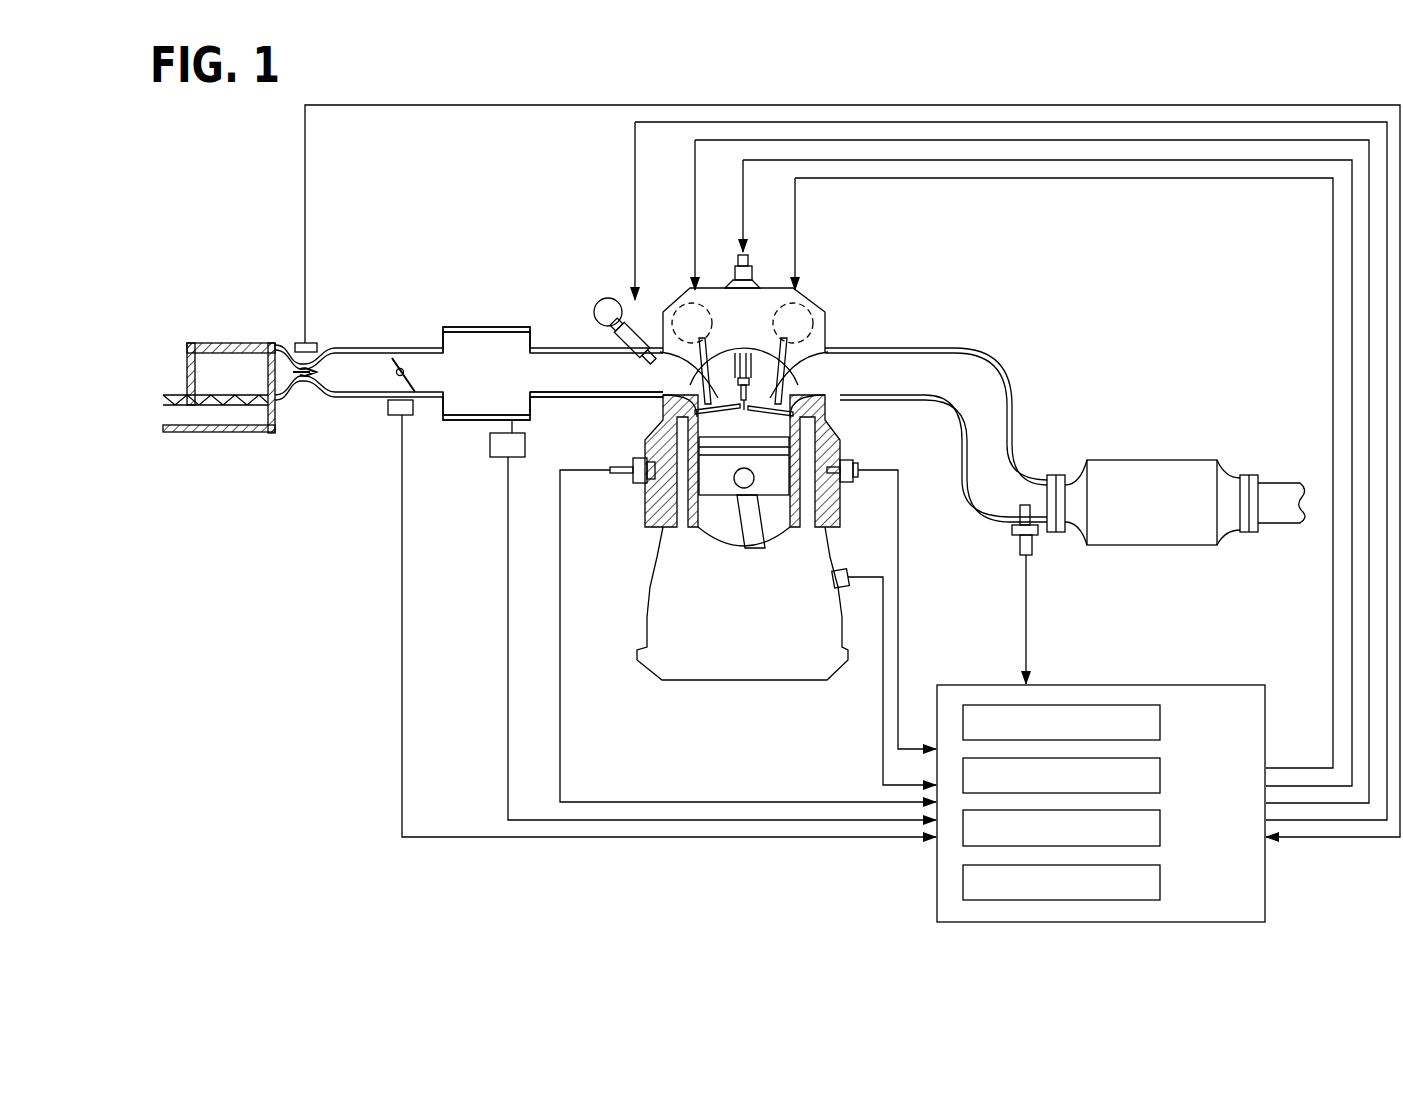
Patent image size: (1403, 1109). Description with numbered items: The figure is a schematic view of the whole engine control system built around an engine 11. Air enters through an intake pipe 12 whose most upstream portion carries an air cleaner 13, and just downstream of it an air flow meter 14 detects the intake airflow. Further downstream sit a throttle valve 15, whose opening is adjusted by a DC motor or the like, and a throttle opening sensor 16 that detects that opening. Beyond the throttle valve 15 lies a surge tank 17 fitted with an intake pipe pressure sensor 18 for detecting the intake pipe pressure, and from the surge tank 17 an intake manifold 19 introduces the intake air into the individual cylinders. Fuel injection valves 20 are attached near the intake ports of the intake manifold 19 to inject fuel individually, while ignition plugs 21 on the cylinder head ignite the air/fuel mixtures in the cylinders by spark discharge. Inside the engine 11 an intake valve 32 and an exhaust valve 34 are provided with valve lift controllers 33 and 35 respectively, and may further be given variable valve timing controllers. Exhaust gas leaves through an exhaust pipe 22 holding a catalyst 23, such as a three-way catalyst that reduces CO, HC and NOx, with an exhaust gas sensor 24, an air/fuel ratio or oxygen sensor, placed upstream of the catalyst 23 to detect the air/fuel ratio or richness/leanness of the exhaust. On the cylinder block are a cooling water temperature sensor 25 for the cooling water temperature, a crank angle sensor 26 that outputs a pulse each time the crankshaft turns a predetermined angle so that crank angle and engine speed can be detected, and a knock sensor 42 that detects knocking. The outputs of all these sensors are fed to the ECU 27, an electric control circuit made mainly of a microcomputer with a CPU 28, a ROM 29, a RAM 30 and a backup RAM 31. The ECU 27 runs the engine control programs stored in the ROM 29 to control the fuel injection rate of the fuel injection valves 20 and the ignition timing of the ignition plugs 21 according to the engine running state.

The engine 11 is at (826, 305).
The intake pipe 12 is at (392, 348).
The air cleaner 13 is at (238, 407).
The air flow meter 14 is at (312, 345).
The throttle valve 15 is at (413, 385).
The throttle opening sensor 16 is at (390, 417).
The surge tank 17 is at (485, 327).
The intake pipe pressure sensor 18 is at (507, 457).
The intake manifold 19 is at (573, 398).
The fuel injection valve 20 is at (615, 348).
The ignition plug 21 is at (790, 345).
The exhaust pipe 22 is at (913, 347).
The catalyst 23 is at (1137, 460).
The exhaust gas sensor 24 is at (1035, 553).
The cooling water temperature sensor 25 is at (642, 487).
The crank angle sensor 26 is at (847, 570).
The ECU 27 is at (1101, 766).
The CPU 28 is at (1160, 723).
The ROM 29 is at (1160, 776).
The RAM 30 is at (1160, 828).
The backup RAM 31 is at (1160, 883).
The intake valve 32 is at (672, 422).
The valve lift controller 33 is at (672, 312).
The exhaust valve 34 is at (827, 420).
The valve lift controller 35 is at (807, 310).
The knock sensor 42 is at (847, 453).